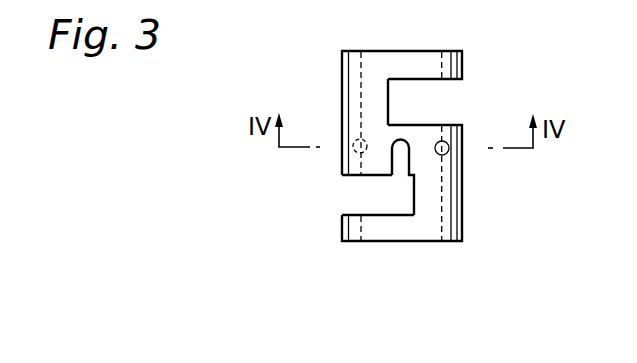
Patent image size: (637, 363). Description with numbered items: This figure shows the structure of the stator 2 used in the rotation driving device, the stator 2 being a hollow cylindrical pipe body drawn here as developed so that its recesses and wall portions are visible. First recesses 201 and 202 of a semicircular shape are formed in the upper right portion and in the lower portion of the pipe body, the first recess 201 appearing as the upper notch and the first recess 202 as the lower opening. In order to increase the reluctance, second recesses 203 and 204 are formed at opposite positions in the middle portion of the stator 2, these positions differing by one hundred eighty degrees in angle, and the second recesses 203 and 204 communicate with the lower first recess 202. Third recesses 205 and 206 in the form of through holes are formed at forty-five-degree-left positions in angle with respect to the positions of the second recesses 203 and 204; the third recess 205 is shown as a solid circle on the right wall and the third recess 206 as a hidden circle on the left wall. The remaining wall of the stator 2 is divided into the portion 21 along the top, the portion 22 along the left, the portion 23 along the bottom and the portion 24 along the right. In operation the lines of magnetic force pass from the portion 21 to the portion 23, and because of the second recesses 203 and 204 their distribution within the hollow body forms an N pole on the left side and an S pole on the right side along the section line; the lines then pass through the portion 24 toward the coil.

The stator 2 is at (338, 72).
The portion 21 is at (427, 62).
The portion 22 is at (374, 76).
The portion 23 is at (368, 232).
The portion 24 is at (464, 216).
The first recess 201 is at (437, 105).
The first recess 202 is at (363, 193).
The second recess 203 is at (301, 178).
The second recess 204 is at (388, 157).
The third recess 205 is at (448, 156).
The third recess 206 is at (324, 124).